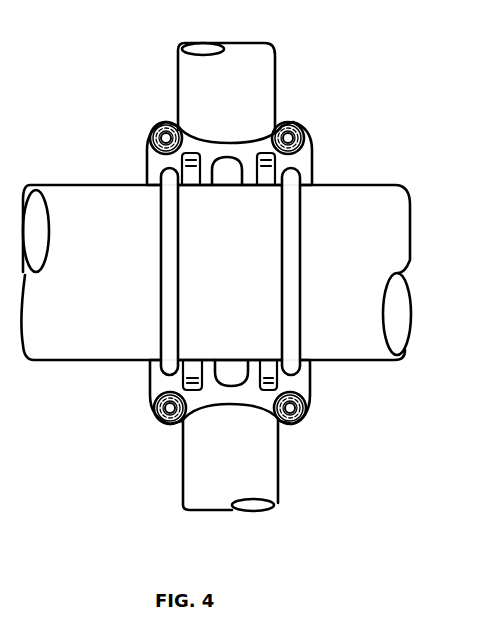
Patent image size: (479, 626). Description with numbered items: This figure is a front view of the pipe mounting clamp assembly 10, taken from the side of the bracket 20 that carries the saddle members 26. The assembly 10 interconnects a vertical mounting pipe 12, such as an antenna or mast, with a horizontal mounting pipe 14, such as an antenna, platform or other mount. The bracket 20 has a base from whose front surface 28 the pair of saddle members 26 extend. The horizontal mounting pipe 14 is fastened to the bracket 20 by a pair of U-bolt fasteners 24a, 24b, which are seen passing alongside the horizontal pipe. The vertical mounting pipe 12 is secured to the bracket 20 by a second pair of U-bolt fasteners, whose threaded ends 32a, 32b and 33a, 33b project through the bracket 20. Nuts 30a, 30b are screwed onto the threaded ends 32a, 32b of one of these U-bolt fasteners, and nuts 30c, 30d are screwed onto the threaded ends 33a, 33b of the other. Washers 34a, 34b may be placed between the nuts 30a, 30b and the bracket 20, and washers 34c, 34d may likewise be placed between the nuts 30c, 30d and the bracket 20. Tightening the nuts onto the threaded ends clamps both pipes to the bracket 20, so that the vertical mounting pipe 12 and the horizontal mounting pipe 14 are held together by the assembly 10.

The pipe mounting clamp assembly 10 is at (338, 100).
The vertical mounting pipe 12 is at (262, 490).
The horizontal mounting pipe 14 is at (390, 233).
The bracket 20 is at (300, 386).
The U-bolt fastener 24a is at (290, 300).
The U-bolt fastener 24b is at (172, 295).
The saddle members 26 is at (157, 173).
The front surface 28 is at (258, 140).
The nut 30a is at (310, 420).
The nut 30b is at (170, 425).
The nut 30c is at (290, 123).
The nut 30d is at (147, 138).
The threaded end 32a is at (307, 407).
The threaded end 32b is at (153, 412).
The threaded end 33a is at (317, 134).
The threaded end 33b is at (160, 124).
The washer 34a is at (290, 427).
The washer 34b is at (165, 402).
The washer 34c is at (305, 142).
The washer 34d is at (172, 120).